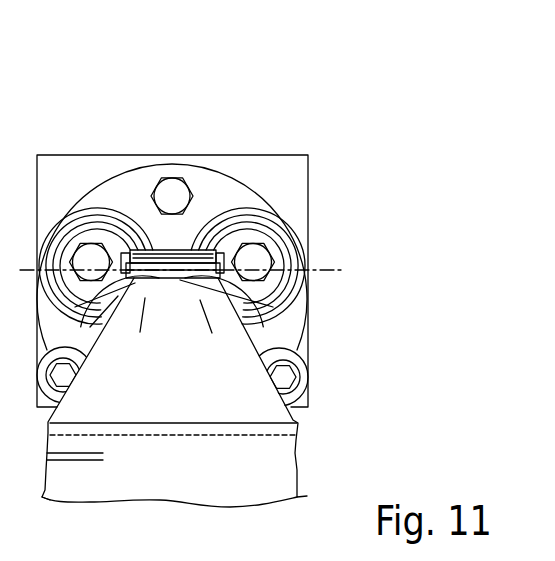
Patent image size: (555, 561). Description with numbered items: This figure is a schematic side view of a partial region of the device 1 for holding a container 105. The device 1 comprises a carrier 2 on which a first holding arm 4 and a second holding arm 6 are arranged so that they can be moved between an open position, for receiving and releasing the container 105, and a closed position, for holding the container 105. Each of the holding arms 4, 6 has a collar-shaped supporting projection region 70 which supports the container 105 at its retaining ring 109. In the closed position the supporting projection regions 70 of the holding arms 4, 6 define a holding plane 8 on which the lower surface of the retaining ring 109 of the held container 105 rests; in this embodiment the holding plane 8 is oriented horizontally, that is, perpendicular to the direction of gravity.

The device 1 is at (304, 103).
The carrier 2 is at (250, 168).
The first holding arm 4 is at (273, 250).
The second holding arm 6 is at (90, 237).
The holding plane 8 is at (325, 270).
The collar-shaped supporting projection region 70 is at (137, 250).
The container 105 is at (270, 470).
The retaining ring 109 is at (243, 327).